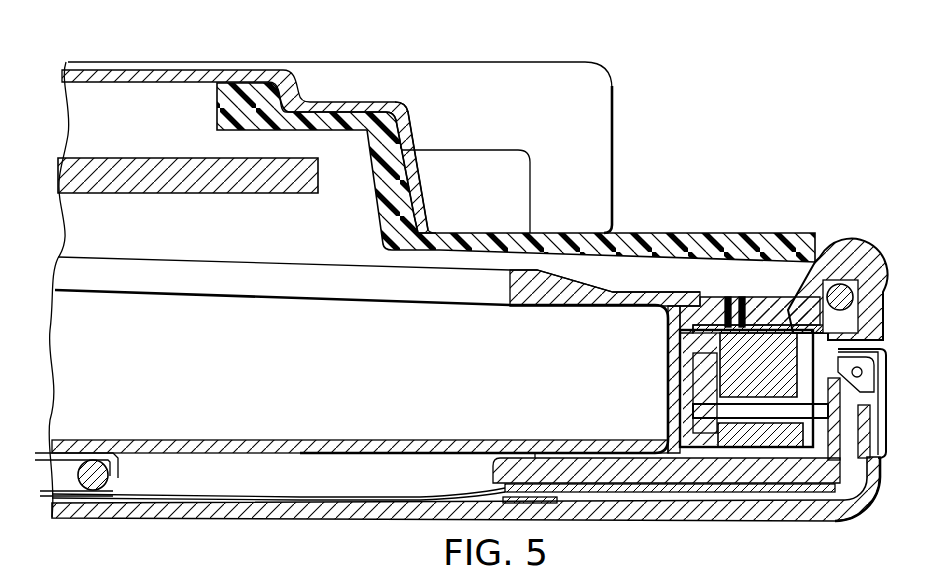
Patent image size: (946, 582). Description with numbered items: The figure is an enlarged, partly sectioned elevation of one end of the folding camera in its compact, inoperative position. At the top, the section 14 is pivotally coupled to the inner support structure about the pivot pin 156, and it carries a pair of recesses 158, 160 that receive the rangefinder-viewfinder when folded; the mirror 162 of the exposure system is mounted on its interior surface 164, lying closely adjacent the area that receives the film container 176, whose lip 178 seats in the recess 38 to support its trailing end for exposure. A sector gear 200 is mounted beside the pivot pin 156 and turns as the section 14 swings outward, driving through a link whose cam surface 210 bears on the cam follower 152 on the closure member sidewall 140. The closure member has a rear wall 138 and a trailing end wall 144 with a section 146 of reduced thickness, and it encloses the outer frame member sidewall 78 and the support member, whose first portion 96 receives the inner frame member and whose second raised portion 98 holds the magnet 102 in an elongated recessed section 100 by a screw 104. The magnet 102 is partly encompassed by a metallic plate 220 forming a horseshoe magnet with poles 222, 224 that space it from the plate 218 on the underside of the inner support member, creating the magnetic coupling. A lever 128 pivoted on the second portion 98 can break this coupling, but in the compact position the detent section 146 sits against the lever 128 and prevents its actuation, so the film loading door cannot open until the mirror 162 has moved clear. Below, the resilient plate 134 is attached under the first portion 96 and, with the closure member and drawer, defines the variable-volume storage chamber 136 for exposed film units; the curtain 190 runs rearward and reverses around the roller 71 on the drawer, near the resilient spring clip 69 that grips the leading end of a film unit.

The section 14 is at (668, 200).
The recess 38 is at (668, 314).
The resilient spring clip 69 is at (97, 458).
The roller 71 is at (109, 483).
The sidewall 78 is at (522, 193).
The first portion 96 is at (538, 455).
The second raised portion 98 is at (863, 373).
The elongated recessed section 100 is at (683, 352).
The magnet 102 is at (715, 376).
The screw 104 is at (842, 400).
The lever 128 is at (887, 370).
The resilient plate 134 is at (433, 495).
The storage chamber 136 is at (226, 476).
The rear wall 138 is at (383, 519).
The sidewall 140 is at (606, 100).
The trailing end wall 144 is at (876, 472).
The section of reduced thickness 146 is at (871, 423).
The cam follower 152 is at (640, 395).
The pivot pin 156 is at (858, 300).
The recess 158 is at (290, 86).
The recess 160 is at (408, 140).
The mirror 162 is at (272, 196).
The interior surface 164 is at (380, 206).
The film container 176 is at (322, 263).
The lip 178 is at (695, 300).
The curtain 190 is at (68, 443).
The sector gear 200 is at (830, 257).
The cam surface 210 is at (660, 347).
The plate 218 is at (762, 318).
The metallic plate 220 is at (694, 409).
The pole 222 is at (728, 297).
The pole 224 is at (884, 338).